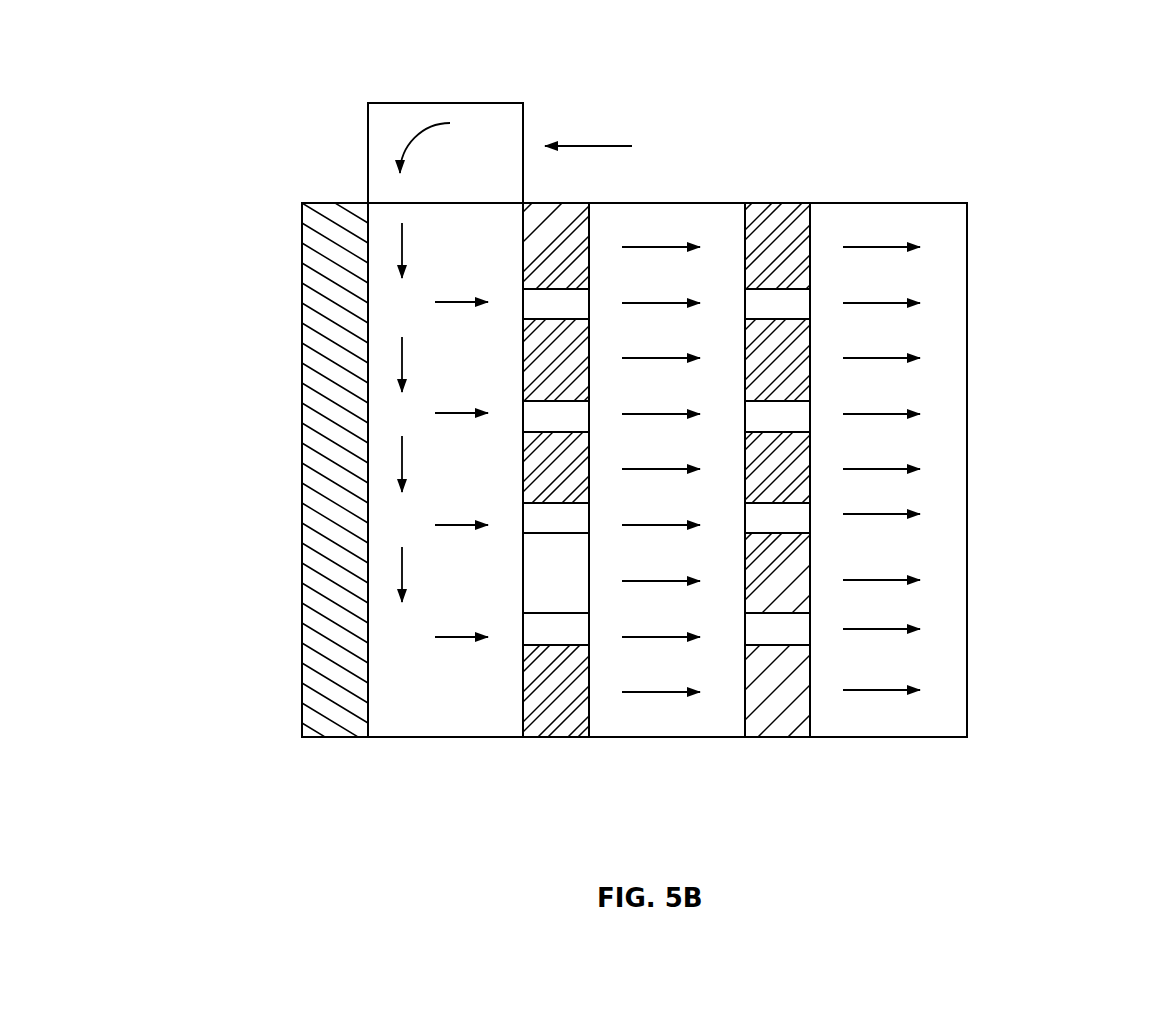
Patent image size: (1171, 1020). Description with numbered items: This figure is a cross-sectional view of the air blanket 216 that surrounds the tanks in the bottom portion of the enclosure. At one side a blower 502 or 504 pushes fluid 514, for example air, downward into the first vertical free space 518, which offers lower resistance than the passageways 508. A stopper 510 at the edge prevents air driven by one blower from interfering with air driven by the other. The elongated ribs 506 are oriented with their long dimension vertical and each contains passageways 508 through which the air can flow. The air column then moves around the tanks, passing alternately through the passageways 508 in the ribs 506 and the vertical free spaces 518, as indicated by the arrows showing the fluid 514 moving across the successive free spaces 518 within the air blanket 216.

The air blanket 216 is at (967, 223).
The blower 502 is at (451, 115).
The blower 504 is at (457, 103).
The rib 506 is at (788, 203).
The passageway 508 is at (800, 308).
The stopper 510 is at (335, 727).
The fluid 514 is at (611, 146).
The vertical free space 518 is at (877, 815).